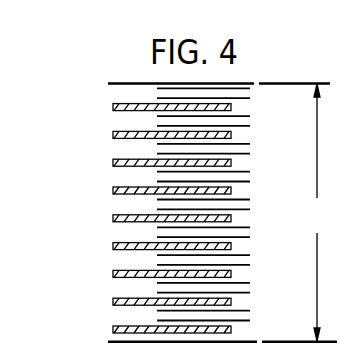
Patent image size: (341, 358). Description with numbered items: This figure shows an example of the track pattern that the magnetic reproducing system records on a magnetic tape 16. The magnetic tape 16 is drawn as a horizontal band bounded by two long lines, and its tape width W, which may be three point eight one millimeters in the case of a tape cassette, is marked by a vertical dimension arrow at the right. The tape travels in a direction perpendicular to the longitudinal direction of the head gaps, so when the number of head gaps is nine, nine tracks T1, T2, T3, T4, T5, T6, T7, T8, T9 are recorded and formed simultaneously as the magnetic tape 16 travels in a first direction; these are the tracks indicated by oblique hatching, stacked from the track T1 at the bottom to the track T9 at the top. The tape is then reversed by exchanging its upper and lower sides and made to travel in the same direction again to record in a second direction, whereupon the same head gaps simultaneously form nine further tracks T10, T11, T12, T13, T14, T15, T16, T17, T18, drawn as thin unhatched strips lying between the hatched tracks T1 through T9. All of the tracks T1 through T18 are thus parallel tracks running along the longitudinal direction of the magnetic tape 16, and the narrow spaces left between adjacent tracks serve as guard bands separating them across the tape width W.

The magnetic tape 16 is at (123, 90).
The tape width W is at (298, 213).
The track T1 is at (114, 330).
The track T2 is at (114, 302).
The track T3 is at (114, 274).
The track T4 is at (114, 246).
The track T5 is at (114, 218).
The track T6 is at (114, 190).
The track T7 is at (114, 163).
The track T8 is at (114, 135).
The track T9 is at (114, 107).
The track T10 is at (245, 92).
The track T11 is at (245, 120).
The track T12 is at (245, 147).
The track T13 is at (245, 175).
The track T14 is at (245, 203).
The track T15 is at (245, 231).
The track T16 is at (245, 258).
The track T17 is at (245, 286).
The track T18 is at (245, 314).